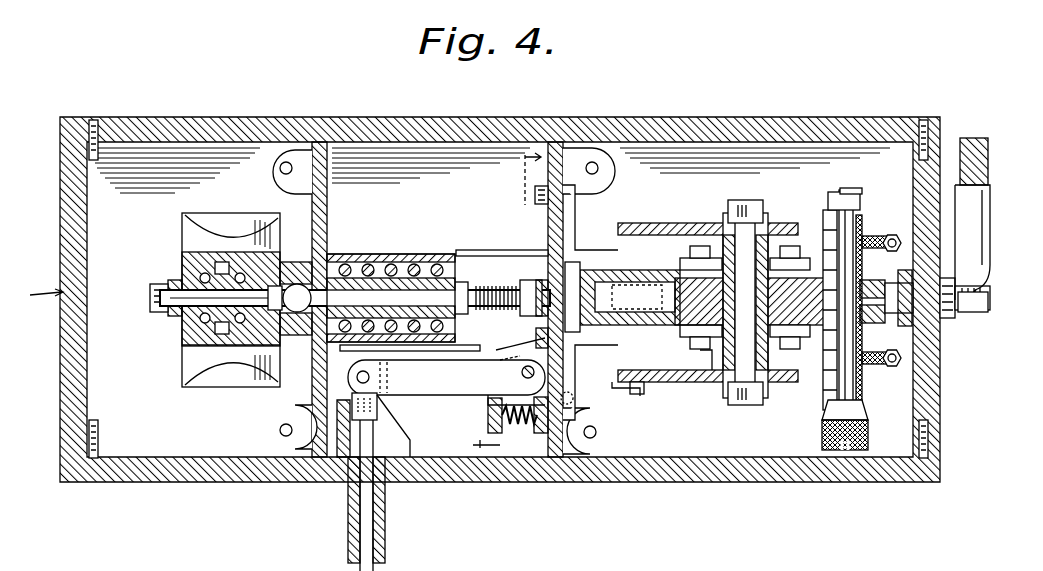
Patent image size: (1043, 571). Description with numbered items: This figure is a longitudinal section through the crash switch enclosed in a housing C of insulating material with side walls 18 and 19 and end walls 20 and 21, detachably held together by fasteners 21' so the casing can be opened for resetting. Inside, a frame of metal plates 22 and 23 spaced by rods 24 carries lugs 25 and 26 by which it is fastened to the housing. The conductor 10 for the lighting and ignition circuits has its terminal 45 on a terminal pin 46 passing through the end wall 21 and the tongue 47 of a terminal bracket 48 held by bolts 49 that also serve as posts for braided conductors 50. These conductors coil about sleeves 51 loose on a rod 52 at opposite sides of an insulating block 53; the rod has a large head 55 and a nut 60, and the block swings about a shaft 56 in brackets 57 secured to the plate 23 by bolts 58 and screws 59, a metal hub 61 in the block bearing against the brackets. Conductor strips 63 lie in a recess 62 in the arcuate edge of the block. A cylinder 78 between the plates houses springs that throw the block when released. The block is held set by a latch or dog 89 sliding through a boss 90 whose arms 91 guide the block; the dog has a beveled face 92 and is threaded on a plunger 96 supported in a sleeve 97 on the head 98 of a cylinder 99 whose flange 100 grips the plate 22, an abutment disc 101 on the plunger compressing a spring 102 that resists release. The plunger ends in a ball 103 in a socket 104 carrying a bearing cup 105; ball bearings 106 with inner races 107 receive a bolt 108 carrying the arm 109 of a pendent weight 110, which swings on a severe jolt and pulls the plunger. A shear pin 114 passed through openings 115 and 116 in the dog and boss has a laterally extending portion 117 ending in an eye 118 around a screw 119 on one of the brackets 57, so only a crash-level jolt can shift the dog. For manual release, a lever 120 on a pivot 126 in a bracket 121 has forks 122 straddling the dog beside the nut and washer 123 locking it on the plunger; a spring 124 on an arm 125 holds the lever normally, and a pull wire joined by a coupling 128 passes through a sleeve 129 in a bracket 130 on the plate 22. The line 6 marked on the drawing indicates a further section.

The section line 6 is at (507, 306).
The conductor 10 is at (990, 175).
The side wall 18 is at (385, 127).
The side wall 19 is at (220, 482).
The end wall 20 is at (60, 345).
The end wall 21 is at (947, 340).
The fasteners 21' is at (509, 291).
The metal plate 22 is at (328, 205).
The metal plate 23 is at (547, 207).
The metal rods 24 is at (387, 253).
The lugs 25 is at (262, 172).
The lugs 26 is at (618, 166).
The terminal 45 is at (992, 240).
The terminal pin 46 is at (982, 292).
The upstanding tongue 47 is at (930, 330).
The terminal bracket 48 is at (930, 400).
The bolts 49 is at (893, 234).
The conductors 50 is at (860, 200).
The sleeves 51 is at (825, 212).
The rod 52 is at (822, 340).
The block of insulating material 53 is at (768, 335).
The large head 55 is at (822, 438).
The shaft 56 is at (725, 388).
The brackets 57 is at (655, 223).
The bolts 58 is at (534, 192).
The screws 59 is at (574, 398).
The nut 60 is at (834, 192).
The hub 61 is at (775, 268).
The slot 62 is at (880, 280).
The conductor strips 63 is at (830, 250).
The cylinder 78 is at (475, 250).
The latch 89 is at (628, 270).
The boss 90 is at (578, 265).
The arms 91 is at (683, 262).
The beveled face 92 is at (640, 283).
The plunger 96 is at (495, 290).
The sleeve 97 is at (432, 250).
The head 98 is at (352, 253).
The cylinder 99 is at (372, 265).
The flange 100 is at (337, 253).
The abutment disc 101 is at (458, 348).
The spring 102 is at (395, 262).
The ball head 103 is at (292, 260).
The socket 104 is at (285, 340).
The bearing cup 105 is at (182, 255).
The ball bearings 106 is at (245, 240).
The inner race 107 is at (225, 365).
The bolt 108 is at (152, 300).
The arm 109 is at (183, 330).
The weight 110 is at (196, 360).
The shear pin 114 is at (578, 348).
The opening 115 is at (540, 280).
The opening 116 is at (578, 255).
The bracket 117 is at (645, 396).
The eye 118 is at (700, 356).
The screw 119 is at (637, 394).
The lever 120 is at (490, 390).
The bracket 121 is at (540, 482).
The forks 122 is at (520, 350).
The nut and washer 123 is at (536, 332).
The spring 124 is at (515, 430).
The arm 125 is at (486, 410).
The pivot 126 is at (522, 374).
The coupling 128 is at (372, 400).
The sleeve 129 is at (348, 528).
The bracket 130 is at (332, 482).
The housing C is at (32, 294).